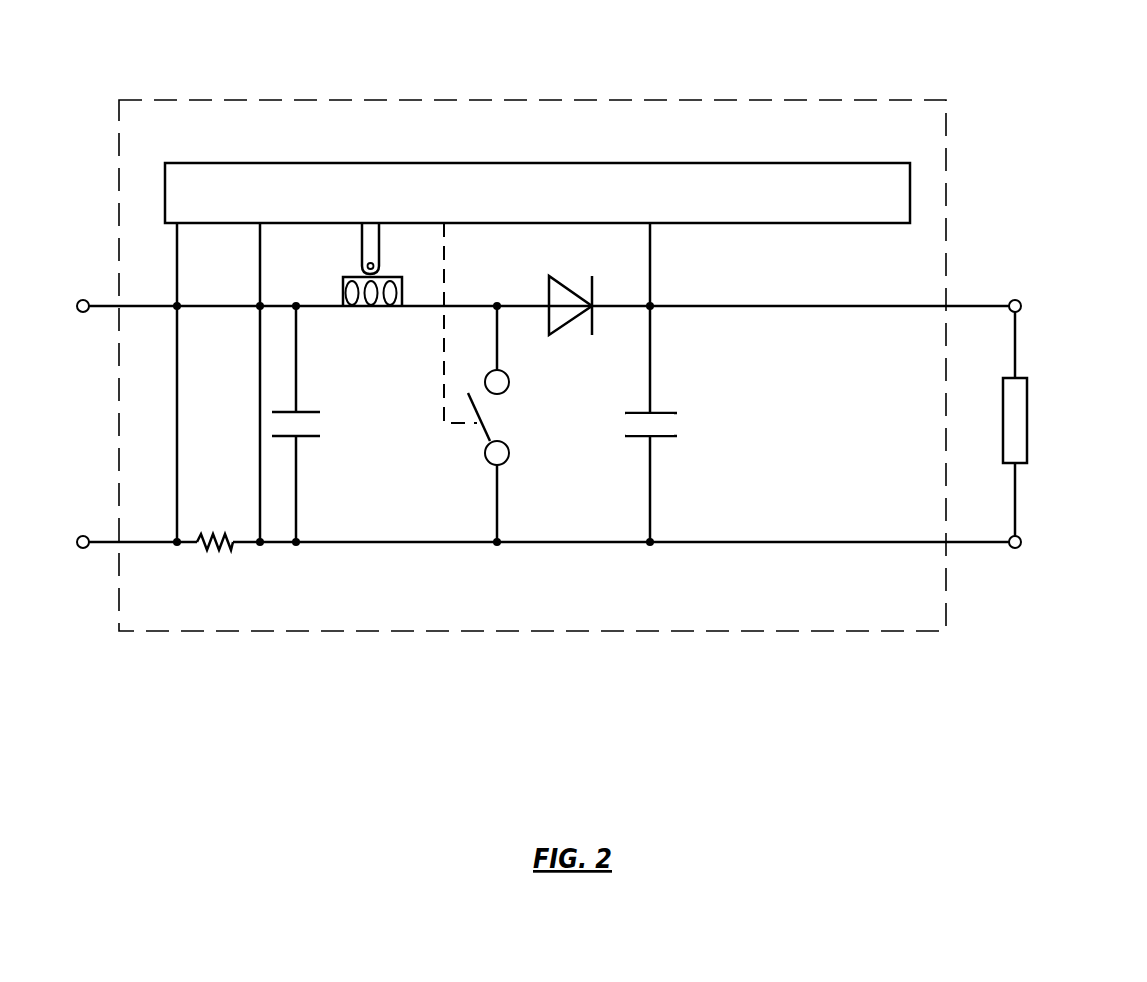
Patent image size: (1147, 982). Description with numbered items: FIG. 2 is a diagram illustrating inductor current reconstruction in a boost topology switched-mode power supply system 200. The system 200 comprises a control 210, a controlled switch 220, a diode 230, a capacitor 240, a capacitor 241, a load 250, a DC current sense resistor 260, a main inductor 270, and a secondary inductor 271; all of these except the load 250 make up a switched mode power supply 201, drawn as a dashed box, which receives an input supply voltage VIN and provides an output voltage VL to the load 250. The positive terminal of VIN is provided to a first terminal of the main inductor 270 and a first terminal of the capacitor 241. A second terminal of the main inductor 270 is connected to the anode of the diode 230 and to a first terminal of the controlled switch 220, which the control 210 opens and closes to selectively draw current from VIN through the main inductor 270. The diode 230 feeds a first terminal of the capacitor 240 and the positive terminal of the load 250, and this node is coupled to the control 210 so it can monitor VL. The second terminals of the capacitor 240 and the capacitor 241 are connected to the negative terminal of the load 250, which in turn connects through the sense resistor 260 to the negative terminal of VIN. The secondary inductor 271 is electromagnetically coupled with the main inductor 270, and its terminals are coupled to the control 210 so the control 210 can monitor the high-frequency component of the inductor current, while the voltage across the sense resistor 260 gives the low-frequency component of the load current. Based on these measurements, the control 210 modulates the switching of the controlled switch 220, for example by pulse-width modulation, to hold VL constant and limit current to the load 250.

The boost topology switched-mode power supply system 200 is at (1062, 78).
The switched mode power supply 201 is at (532, 365).
The control 210 is at (537, 293).
The controlled switch 220 is at (509, 430).
The diode 230 is at (592, 282).
The capacitor 240 is at (640, 412).
The capacitor 241 is at (313, 412).
The load 250 is at (1027, 400).
The DC current sense resistor 260 is at (205, 549).
The main inductor 270 is at (390, 302).
The secondary inductor 271 is at (360, 267).